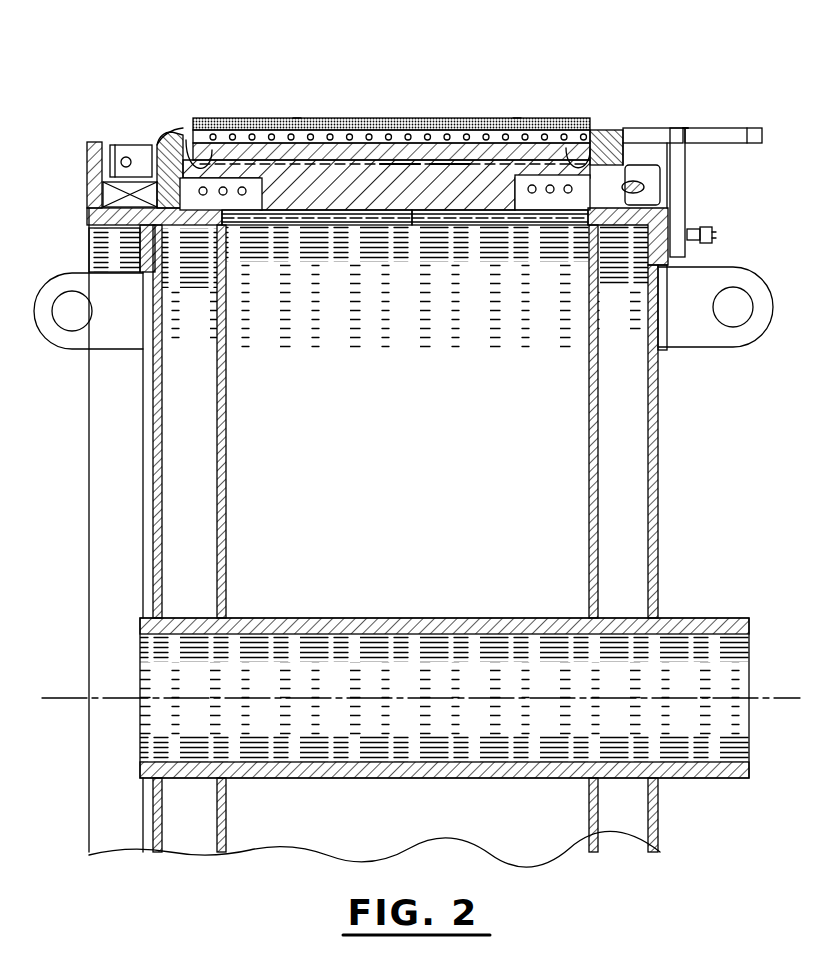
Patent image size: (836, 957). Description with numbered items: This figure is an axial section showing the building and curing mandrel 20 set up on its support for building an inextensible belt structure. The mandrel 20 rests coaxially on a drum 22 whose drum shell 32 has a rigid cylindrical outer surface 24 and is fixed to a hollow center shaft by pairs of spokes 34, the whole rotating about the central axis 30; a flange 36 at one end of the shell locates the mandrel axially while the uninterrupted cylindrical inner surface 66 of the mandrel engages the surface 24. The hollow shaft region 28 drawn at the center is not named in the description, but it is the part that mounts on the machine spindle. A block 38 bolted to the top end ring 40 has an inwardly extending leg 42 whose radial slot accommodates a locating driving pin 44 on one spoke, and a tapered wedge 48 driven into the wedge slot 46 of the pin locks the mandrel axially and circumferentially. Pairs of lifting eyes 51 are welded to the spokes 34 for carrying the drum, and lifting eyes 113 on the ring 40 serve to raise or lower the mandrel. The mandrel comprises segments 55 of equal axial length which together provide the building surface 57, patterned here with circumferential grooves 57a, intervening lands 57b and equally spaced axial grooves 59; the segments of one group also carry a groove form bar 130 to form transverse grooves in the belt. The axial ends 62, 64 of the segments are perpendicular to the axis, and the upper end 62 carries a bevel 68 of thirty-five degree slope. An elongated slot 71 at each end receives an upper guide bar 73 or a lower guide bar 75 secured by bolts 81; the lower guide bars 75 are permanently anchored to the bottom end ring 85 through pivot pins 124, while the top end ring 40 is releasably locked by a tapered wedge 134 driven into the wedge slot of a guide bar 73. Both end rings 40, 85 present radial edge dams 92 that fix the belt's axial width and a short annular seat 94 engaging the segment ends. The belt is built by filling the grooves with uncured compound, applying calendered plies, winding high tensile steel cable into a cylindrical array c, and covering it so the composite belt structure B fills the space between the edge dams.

The mandrel 20 is at (391, 90).
The drum 22 is at (86, 220).
The rigid cylindrical outer surface 24 is at (222, 228).
The tube 28 is at (298, 617).
The central axis 30 is at (64, 698).
The drum shell 32 is at (165, 240).
The spokes 34 is at (227, 448).
The flange 36 is at (88, 142).
The block 38 is at (664, 122).
The top end ring 40 is at (605, 142).
The inwardly extending leg 42 is at (677, 204).
The locating driving pin 44 is at (706, 244).
The wedge slot 46 is at (700, 232).
The tapered wedge 48 is at (714, 235).
The lifting eyes 51 is at (64, 346).
The segments 55 is at (357, 195).
The building surface 57 is at (483, 143).
The circumferential grooves 57a is at (437, 160).
The lands 57b is at (395, 160).
The axially extending grooves 59 is at (320, 160).
The upper axial end 62 is at (567, 194).
The lower axial end 64 is at (178, 138).
The cylindrical inner surface 66 is at (305, 212).
The bevel 68 is at (688, 126).
The elongated slot 71 is at (250, 209).
The upper guide bar 73 is at (642, 172).
The lower guide bar 75 is at (103, 194).
The bolts 81 is at (560, 215).
The bottom end ring 85 is at (173, 135).
The edge dams 92 is at (203, 138).
The annular seat 94 is at (234, 143).
The lifting eyes 113 is at (752, 128).
The pivot pins 124 is at (126, 160).
The groove form bar 130 is at (380, 160).
The tapered wedge 134 is at (642, 194).
The composite belt structure B is at (297, 118).
The cylindrical array c is at (517, 118).